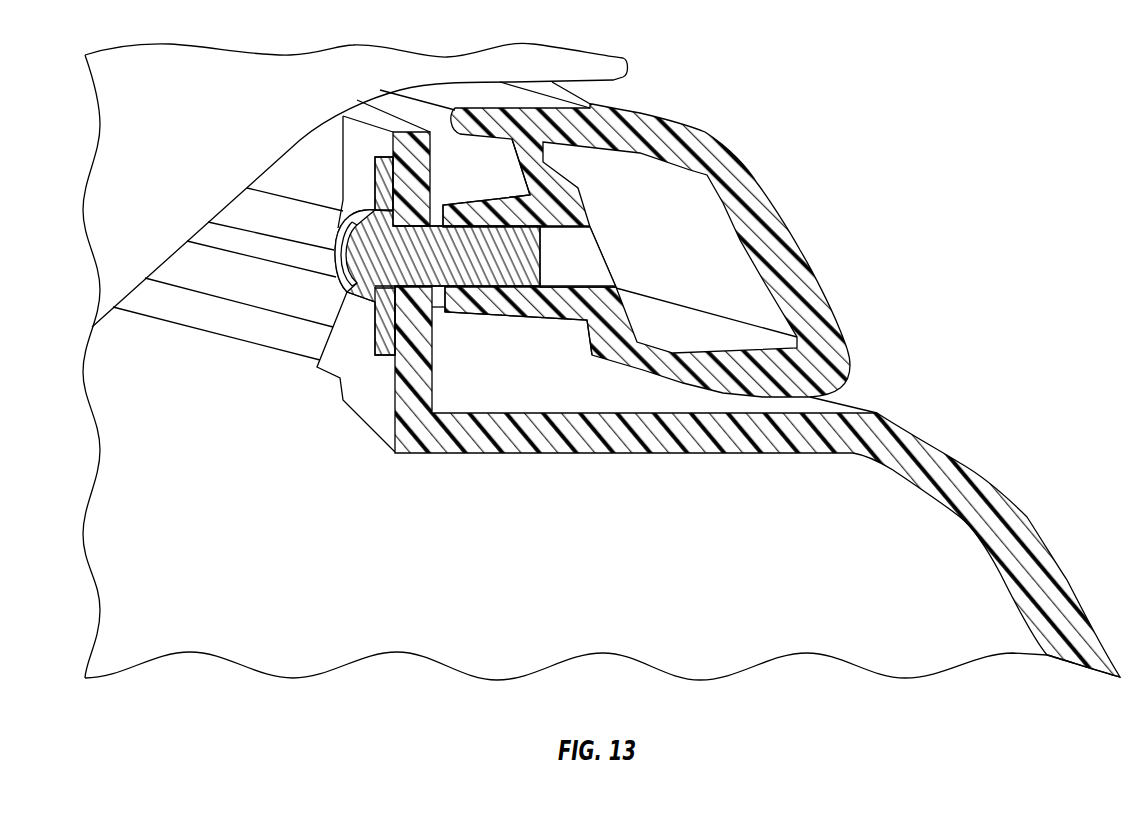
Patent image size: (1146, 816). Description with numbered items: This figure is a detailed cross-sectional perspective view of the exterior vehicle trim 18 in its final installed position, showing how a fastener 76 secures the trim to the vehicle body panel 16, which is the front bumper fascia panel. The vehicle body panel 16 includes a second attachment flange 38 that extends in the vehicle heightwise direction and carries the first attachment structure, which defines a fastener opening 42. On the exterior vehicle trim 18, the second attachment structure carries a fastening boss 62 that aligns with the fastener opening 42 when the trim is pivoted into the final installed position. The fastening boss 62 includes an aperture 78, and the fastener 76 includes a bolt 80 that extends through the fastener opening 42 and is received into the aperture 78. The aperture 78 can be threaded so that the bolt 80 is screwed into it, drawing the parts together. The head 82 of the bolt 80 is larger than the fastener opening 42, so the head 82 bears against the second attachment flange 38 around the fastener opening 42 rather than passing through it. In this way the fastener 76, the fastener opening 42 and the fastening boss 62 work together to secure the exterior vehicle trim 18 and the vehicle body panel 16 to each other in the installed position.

The vehicle body panel 16 is at (952, 457).
The exterior vehicle trim 18 is at (807, 252).
The second attachment flange 38 is at (338, 360).
The fastener opening 42 is at (413, 224).
The fastening boss 62 is at (470, 204).
The fastener 76 is at (387, 317).
The aperture 78 is at (513, 290).
The bolt 80 is at (442, 293).
The head 82 is at (362, 213).